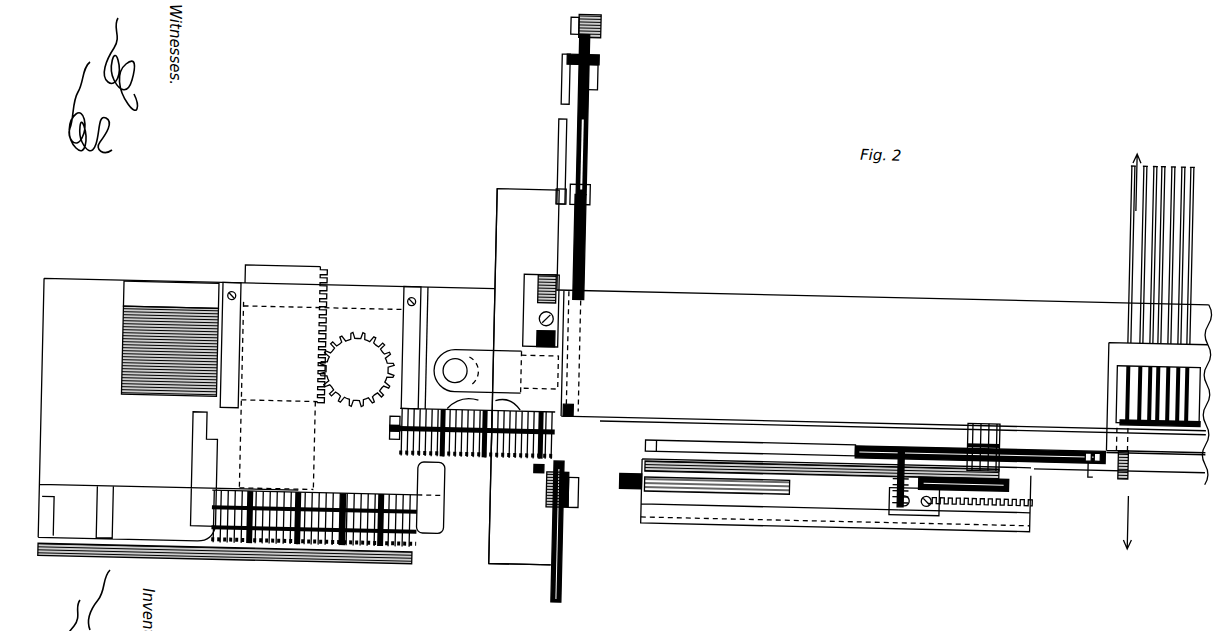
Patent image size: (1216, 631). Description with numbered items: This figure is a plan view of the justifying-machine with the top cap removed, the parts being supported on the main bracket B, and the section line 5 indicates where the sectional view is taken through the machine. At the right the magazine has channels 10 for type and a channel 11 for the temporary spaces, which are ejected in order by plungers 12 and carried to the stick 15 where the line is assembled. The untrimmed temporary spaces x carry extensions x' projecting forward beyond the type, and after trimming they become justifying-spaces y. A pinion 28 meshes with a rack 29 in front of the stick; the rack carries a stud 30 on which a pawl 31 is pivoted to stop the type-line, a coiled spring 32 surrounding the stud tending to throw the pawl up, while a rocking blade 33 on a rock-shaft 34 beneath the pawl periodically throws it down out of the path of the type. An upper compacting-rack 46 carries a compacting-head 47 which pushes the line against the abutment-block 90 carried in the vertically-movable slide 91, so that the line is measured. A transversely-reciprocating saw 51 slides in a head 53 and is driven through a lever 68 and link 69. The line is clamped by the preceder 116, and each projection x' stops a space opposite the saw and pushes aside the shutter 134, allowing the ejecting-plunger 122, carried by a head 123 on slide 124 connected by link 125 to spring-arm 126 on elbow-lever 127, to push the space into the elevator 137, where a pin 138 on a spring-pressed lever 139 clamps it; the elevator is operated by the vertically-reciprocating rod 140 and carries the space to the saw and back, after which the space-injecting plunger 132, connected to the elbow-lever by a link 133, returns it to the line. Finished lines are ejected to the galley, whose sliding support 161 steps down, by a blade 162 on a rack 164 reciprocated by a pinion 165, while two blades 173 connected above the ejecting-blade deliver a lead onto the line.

The section line 5 is at (1134, 348).
The type channels 10 is at (1132, 365).
The temporary-space channel 11 is at (1120, 385).
The plungers 12 is at (1124, 217).
The stick 15 is at (1058, 420).
The pinion 28 is at (938, 500).
The rack 29 is at (1032, 500).
The stud 30 is at (905, 444).
The pawl 31 is at (948, 458).
The coiled spring 32 is at (895, 494).
The rocking blade 33 is at (755, 448).
The rock-shaft 34 is at (785, 478).
The upper compacting-rack 46 is at (1020, 437).
The compacting-head 47 is at (1092, 452).
The saw 51 is at (566, 578).
The head 53 is at (519, 566).
The lever 68 is at (594, 30).
The link 69 is at (571, 48).
The abutment-block 90 is at (832, 440).
The slide 91 is at (660, 445).
The preceder 116 is at (390, 455).
The ejecting-plunger 122 is at (574, 413).
The head 123 is at (575, 508).
The slide 124 is at (585, 250).
The link 125 is at (584, 148).
The spring-arm 126 is at (590, 80).
The elbow-lever 127 is at (592, 63).
The space-injecting plunger 132 is at (579, 323).
The link 133 is at (554, 90).
The shutter 134 is at (535, 470).
The elevator 137 is at (482, 374).
The pin 138 is at (558, 383).
The spring-pressed lever 139 is at (524, 312).
The vertically-reciprocating rod 140 is at (453, 348).
The sliding support 161 is at (345, 568).
The blade 162 is at (383, 292).
The rack 164 is at (279, 278).
The pinion 165 is at (365, 345).
The blades 173 is at (238, 380).
The main bracket B is at (915, 292).
The untrimmed temporary spaces x is at (614, 424).
The extensions x' is at (597, 484).
The justifying spaces y is at (484, 400).